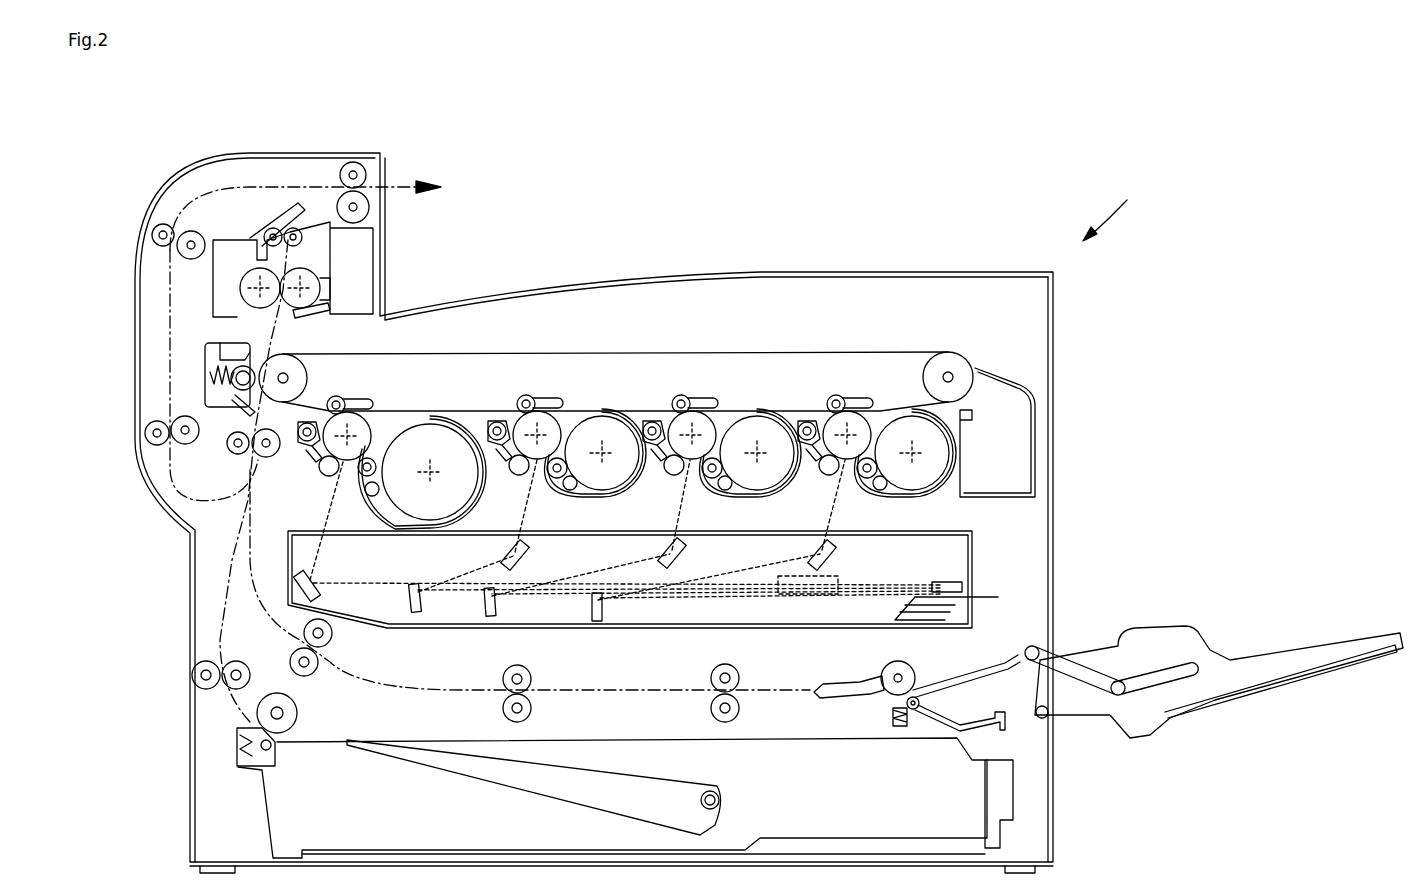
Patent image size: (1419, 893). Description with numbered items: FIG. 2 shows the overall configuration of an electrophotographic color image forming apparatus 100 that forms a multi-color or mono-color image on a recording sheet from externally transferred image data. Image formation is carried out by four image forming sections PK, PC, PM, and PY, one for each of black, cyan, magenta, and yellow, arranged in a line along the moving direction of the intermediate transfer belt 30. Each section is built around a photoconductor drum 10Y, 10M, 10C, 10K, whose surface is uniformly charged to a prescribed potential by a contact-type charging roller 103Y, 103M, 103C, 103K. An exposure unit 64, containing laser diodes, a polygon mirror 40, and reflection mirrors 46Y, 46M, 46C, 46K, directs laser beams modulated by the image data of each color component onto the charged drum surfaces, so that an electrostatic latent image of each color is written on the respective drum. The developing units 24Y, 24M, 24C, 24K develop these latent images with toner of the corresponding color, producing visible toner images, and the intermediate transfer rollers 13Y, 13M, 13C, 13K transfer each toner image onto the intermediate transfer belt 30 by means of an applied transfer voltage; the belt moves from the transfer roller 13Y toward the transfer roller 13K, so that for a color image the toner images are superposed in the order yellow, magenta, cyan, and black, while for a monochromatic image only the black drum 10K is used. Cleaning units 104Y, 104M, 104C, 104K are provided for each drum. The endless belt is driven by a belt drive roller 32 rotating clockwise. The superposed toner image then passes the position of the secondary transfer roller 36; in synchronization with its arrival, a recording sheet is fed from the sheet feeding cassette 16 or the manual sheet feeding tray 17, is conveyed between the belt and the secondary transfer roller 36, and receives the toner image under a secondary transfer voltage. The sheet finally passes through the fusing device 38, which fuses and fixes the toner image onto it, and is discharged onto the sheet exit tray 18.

The image forming apparatus 100 is at (1155, 189).
The fusing device 38 is at (228, 254).
The secondary transfer roller 36 is at (235, 372).
The belt drive roller 32 is at (284, 356).
The intermediate transfer belt 30 is at (948, 352).
The sheet exit tray 18 is at (490, 290).
The image forming section PK is at (370, 380).
The image forming section PC is at (557, 378).
The image forming section PM is at (708, 377).
The image forming section PY is at (862, 377).
The photoconductor drum 10K is at (350, 412).
The photoconductor drum 10C is at (540, 411).
The photoconductor drum 10M is at (693, 411).
The photoconductor drum 10Y is at (848, 411).
The intermediate transfer roller 13K is at (333, 396).
The intermediate transfer roller 13C is at (525, 395).
The intermediate transfer roller 13M is at (680, 395).
The intermediate transfer roller 13Y is at (835, 395).
The developing unit 24K is at (432, 426).
The developing unit 24C is at (602, 416).
The developing unit 24M is at (757, 416).
The developing unit 24Y is at (912, 416).
The cleaning unit 104K is at (305, 441).
The cleaning unit 104C is at (498, 421).
The cleaning unit 104M is at (655, 421).
The cleaning unit 104Y is at (809, 421).
The charging roller 103K is at (325, 475).
The charging roller 103C is at (518, 475).
The charging roller 103M is at (673, 475).
The charging roller 103Y is at (828, 475).
The exposure unit 64 is at (664, 544).
The polygon mirror 40 is at (962, 588).
The reflection mirror 46K is at (315, 578).
The reflection mirror 46C is at (528, 550).
The reflection mirror 46M is at (688, 550).
The reflection mirror 46Y is at (846, 550).
The sheet feeding cassette 16 is at (815, 748).
The manual sheet feeding tray 17 is at (1235, 665).